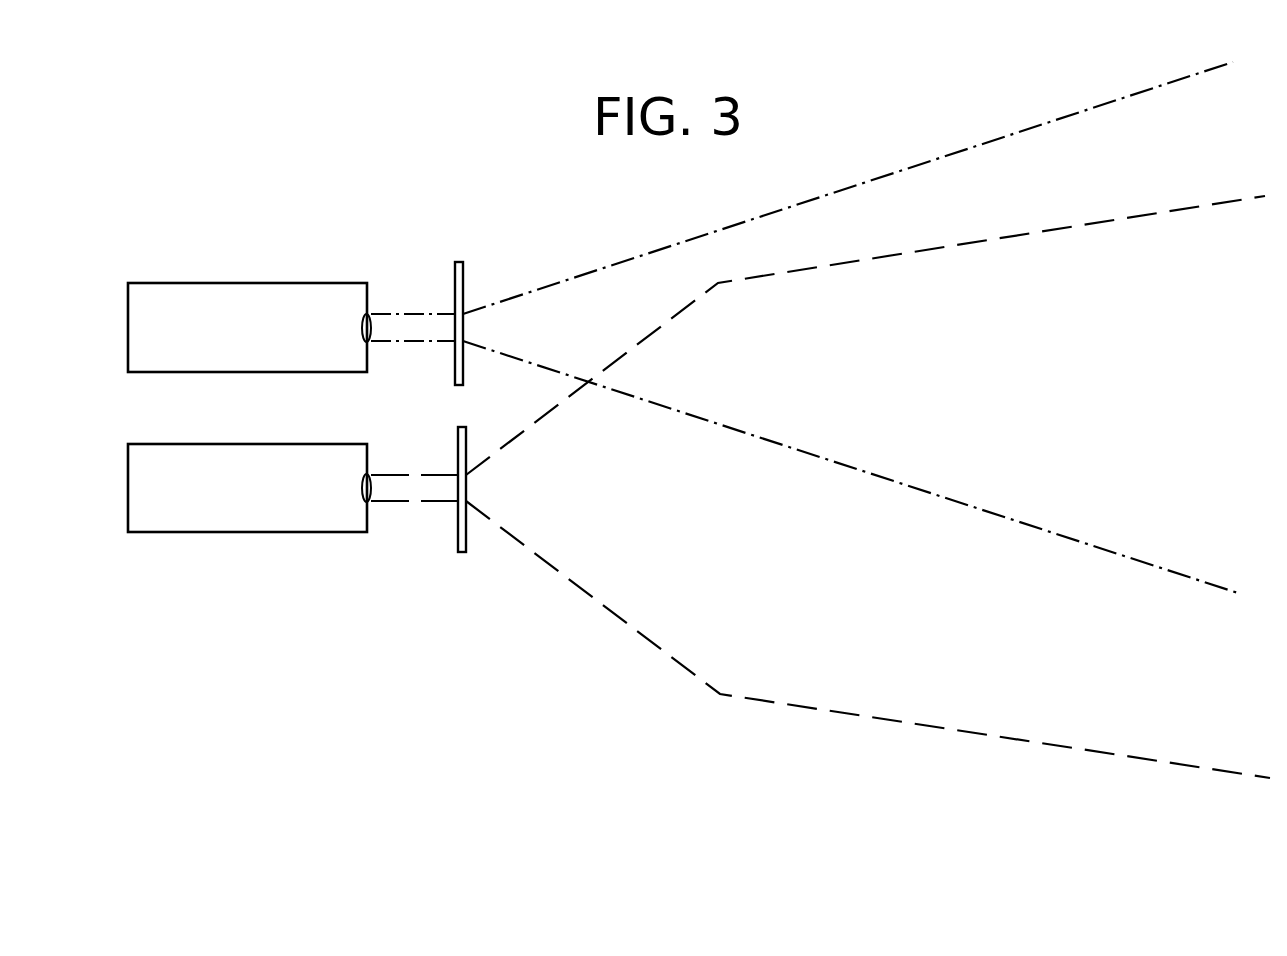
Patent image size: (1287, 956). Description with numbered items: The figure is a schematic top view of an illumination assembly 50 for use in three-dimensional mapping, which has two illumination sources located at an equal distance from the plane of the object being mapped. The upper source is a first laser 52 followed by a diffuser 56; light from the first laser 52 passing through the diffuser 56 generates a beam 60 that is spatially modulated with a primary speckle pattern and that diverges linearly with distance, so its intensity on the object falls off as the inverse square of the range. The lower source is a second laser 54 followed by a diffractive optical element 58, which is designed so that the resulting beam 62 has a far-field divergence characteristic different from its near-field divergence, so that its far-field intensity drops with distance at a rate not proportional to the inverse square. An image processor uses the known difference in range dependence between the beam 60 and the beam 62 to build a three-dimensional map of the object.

The illumination assembly 50 is at (503, 668).
The first laser 52 is at (213, 283).
The second laser 54 is at (230, 532).
The diffuser 56 is at (455, 277).
The diffractive optical element 58 is at (458, 550).
The beam 60 is at (996, 141).
The beam 62 is at (1077, 226).